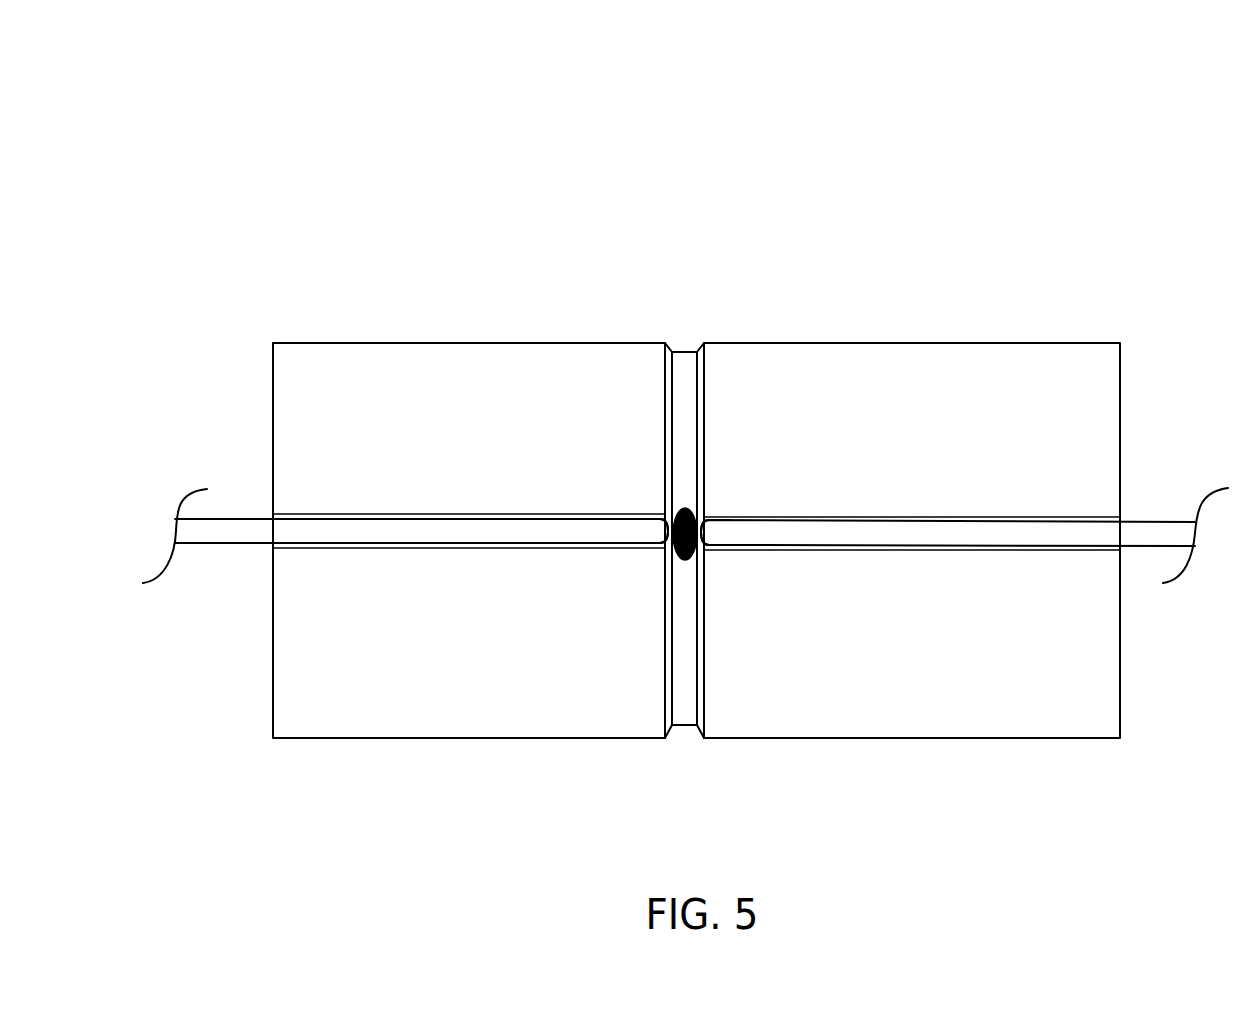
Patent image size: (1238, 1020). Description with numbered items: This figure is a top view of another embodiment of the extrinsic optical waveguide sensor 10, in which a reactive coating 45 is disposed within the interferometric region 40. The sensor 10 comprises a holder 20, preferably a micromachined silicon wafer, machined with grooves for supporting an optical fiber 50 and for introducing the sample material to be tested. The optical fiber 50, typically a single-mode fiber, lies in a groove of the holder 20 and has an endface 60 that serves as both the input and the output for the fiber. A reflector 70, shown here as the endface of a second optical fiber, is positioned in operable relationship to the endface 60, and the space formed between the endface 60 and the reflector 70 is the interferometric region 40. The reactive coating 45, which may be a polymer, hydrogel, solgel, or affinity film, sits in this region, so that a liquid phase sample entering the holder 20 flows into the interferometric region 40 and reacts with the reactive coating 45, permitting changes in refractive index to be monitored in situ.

The extrinsic optical waveguide sensor 10 is at (903, 140).
The holder 20 is at (967, 375).
The interferometric region 40 is at (688, 462).
The reactive coating 45 is at (682, 510).
The optical fiber 50 is at (246, 525).
The endface 60 is at (661, 517).
The reflector 70 is at (707, 517).